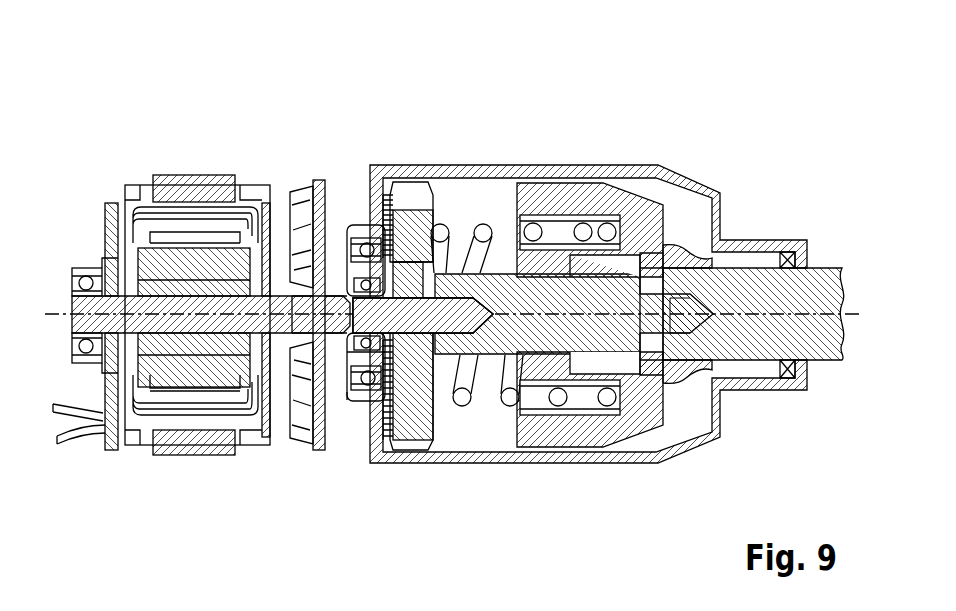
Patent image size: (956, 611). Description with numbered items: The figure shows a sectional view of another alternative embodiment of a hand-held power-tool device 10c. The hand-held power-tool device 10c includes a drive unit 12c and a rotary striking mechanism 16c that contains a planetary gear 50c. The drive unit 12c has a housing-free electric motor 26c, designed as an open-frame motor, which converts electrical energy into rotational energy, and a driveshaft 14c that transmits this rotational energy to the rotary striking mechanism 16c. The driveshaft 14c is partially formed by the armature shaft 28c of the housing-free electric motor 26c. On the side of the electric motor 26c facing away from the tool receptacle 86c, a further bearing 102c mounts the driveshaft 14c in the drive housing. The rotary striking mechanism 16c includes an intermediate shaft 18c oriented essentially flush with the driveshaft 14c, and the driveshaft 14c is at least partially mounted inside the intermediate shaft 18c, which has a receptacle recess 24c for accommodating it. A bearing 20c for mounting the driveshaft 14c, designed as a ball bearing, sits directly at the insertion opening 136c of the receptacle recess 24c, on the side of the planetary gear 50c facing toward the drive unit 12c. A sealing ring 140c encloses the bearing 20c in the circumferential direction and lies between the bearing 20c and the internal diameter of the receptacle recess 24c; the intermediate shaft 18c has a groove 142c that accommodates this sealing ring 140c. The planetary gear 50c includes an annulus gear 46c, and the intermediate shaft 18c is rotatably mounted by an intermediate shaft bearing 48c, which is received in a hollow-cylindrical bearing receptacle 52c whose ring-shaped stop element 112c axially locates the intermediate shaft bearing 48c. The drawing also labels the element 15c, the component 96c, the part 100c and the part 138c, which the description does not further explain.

The hand-held power-tool device 10c is at (684, 130).
The drive unit 12c is at (167, 122).
The driveshaft 14c is at (207, 323).
The output element 15c is at (750, 348).
The rotary striking mechanism 16c is at (610, 148).
The intermediate shaft 18c is at (533, 300).
The bearing 20c is at (400, 425).
The receptacle recess 24c is at (432, 330).
The housing-free electric motor 26c is at (127, 432).
The armature shaft 28c is at (211, 404).
The annulus gear 46c is at (367, 244).
The intermediate shaft bearing 48c is at (405, 215).
The planetary gear 50c is at (428, 100).
The bearing receptacle 52c is at (335, 210).
The tool receptacle 86c is at (822, 345).
The bearing block 96c is at (615, 410).
The coupling element 100c is at (683, 262).
The further bearing 102c is at (85, 272).
The stop element 112c is at (367, 350).
The insertion opening 136c is at (316, 284).
The guide pin 138c is at (558, 400).
The sealing ring 140c is at (368, 383).
The groove 142c is at (356, 358).